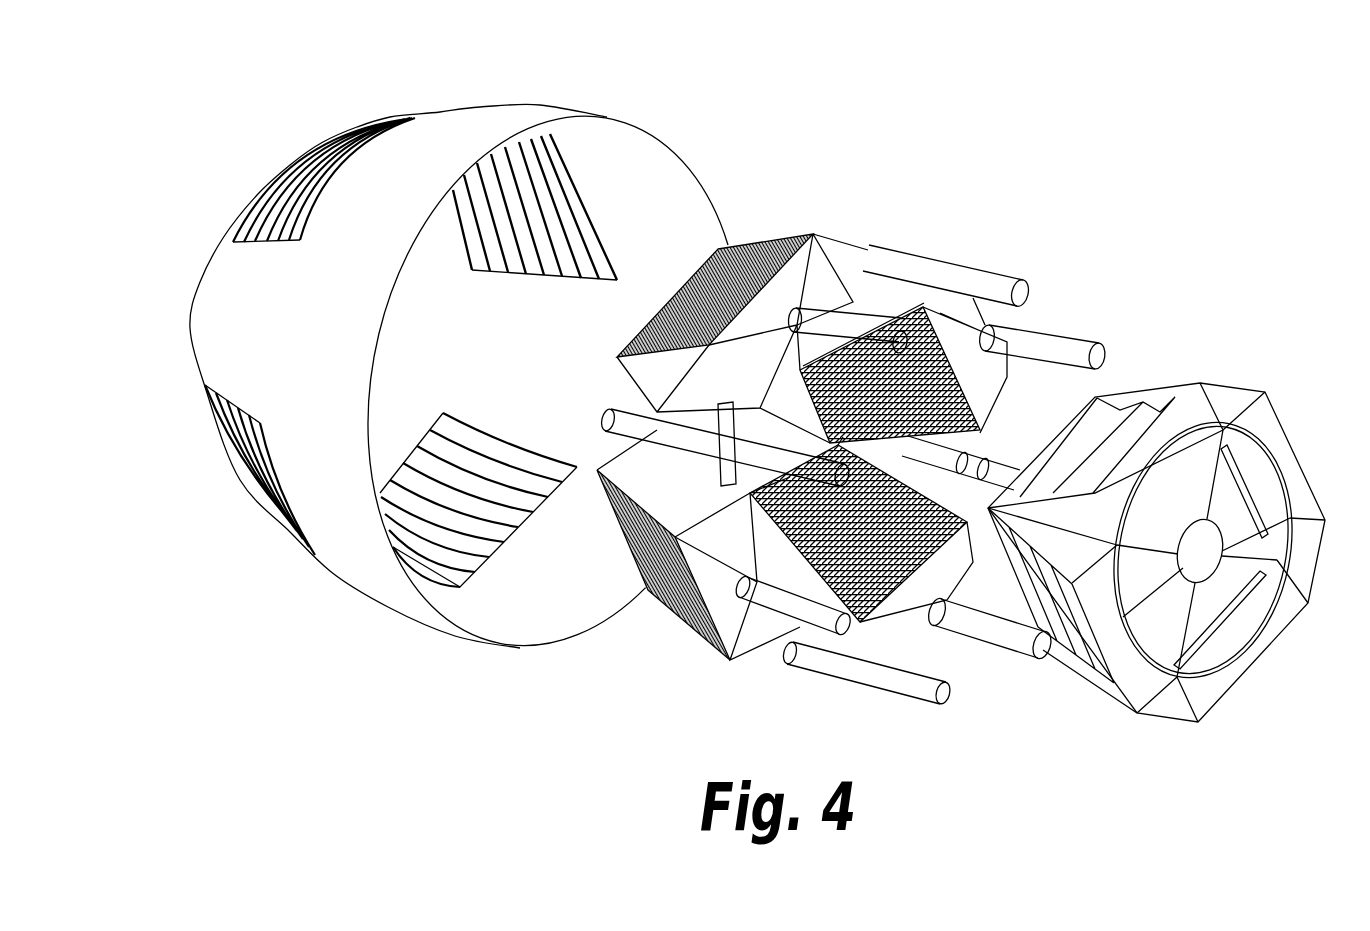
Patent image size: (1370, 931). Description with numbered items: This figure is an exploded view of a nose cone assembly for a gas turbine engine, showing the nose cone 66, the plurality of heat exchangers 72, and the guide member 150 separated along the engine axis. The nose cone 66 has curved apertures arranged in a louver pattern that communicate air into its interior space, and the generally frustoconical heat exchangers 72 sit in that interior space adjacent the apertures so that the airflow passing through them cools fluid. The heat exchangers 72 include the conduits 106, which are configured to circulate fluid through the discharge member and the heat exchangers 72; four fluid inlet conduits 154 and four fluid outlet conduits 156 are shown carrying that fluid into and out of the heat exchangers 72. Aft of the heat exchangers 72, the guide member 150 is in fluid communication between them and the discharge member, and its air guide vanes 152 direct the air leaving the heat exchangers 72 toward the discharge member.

The nose cone 66 is at (478, 117).
The heat exchanger 72 is at (878, 212).
The conduits 106 is at (1108, 328).
The guide member 150 is at (1266, 372).
The air guide vanes 152 is at (1130, 410).
The fluid inlet conduits 154 is at (873, 330).
The fluid outlet conduits 156 is at (848, 243).